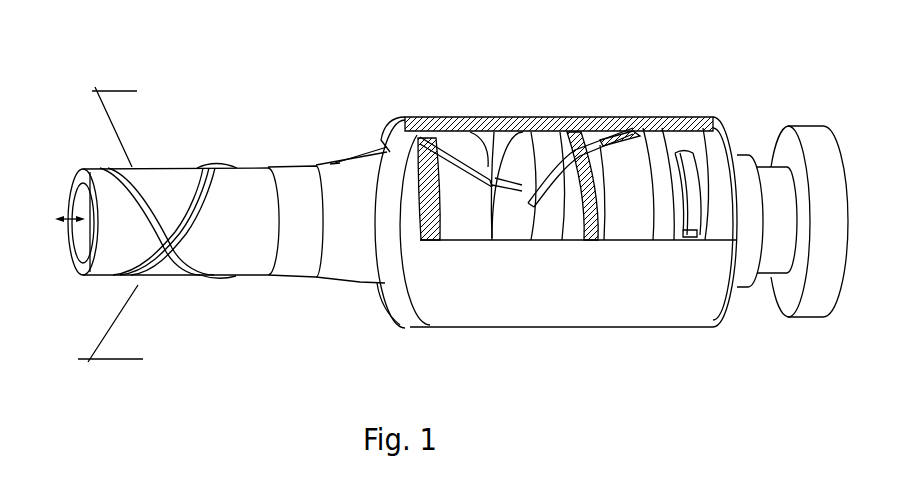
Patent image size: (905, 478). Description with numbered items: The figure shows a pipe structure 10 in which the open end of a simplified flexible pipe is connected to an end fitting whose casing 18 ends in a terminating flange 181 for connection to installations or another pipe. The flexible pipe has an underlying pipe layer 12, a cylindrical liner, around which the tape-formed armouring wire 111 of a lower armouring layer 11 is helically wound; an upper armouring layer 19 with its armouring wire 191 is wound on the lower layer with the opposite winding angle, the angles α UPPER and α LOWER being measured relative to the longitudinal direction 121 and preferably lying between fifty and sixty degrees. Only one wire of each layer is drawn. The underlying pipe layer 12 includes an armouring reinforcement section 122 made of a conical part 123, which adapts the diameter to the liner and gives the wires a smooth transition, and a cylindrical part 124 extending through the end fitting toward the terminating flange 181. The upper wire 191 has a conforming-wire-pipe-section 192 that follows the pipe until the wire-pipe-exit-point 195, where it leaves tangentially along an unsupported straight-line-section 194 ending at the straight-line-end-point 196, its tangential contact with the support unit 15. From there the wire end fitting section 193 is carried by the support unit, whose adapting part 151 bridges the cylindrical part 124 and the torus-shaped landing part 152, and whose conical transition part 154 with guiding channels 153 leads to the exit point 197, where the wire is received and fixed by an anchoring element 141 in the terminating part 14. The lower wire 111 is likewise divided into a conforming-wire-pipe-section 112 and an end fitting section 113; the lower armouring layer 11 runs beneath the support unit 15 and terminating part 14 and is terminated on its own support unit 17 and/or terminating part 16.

The pipe structure 10 is at (284, 340).
The lower armouring layer 11 is at (103, 155).
The armouring wire of the lower armouring layer 111 is at (193, 275).
The conforming-wire-pipe-section 112 is at (149, 194).
The end fitting section 113 is at (620, 127).
The underlying pipe layer 12 is at (124, 249).
The longitudinal direction 121 is at (68, 222).
The armouring reinforcement section 122 is at (301, 154).
The conical part 123 is at (292, 263).
The cylindrical part 124 is at (348, 177).
The terminating part 14 is at (496, 124).
The anchoring element 141 is at (503, 178).
The support unit 15 is at (384, 128).
The adapting part 151 is at (392, 267).
The landing part 152 is at (417, 238).
The guiding channels 153 is at (437, 217).
The transition part 154 is at (468, 208).
The terminating part 16 is at (665, 129).
The support unit 17 is at (565, 125).
The casing 18 is at (663, 308).
The terminating flange 181 is at (813, 302).
The upper armouring layer 19 is at (213, 154).
The armouring wire of the upper armouring layer 191 is at (151, 276).
The conforming-wire-pipe-section 192 is at (188, 187).
The wire end fitting section 193 is at (455, 153).
The straight-line-section 194 is at (355, 144).
The wire-pipe-exit-point 195 is at (330, 174).
The straight-line-end-point 196 is at (404, 161).
The exit point 197 is at (490, 163).
The winding angle of the lower armouring layer LOWER is at (111, 108).
The winding angle of the upper armouring layer UPPER is at (119, 333).